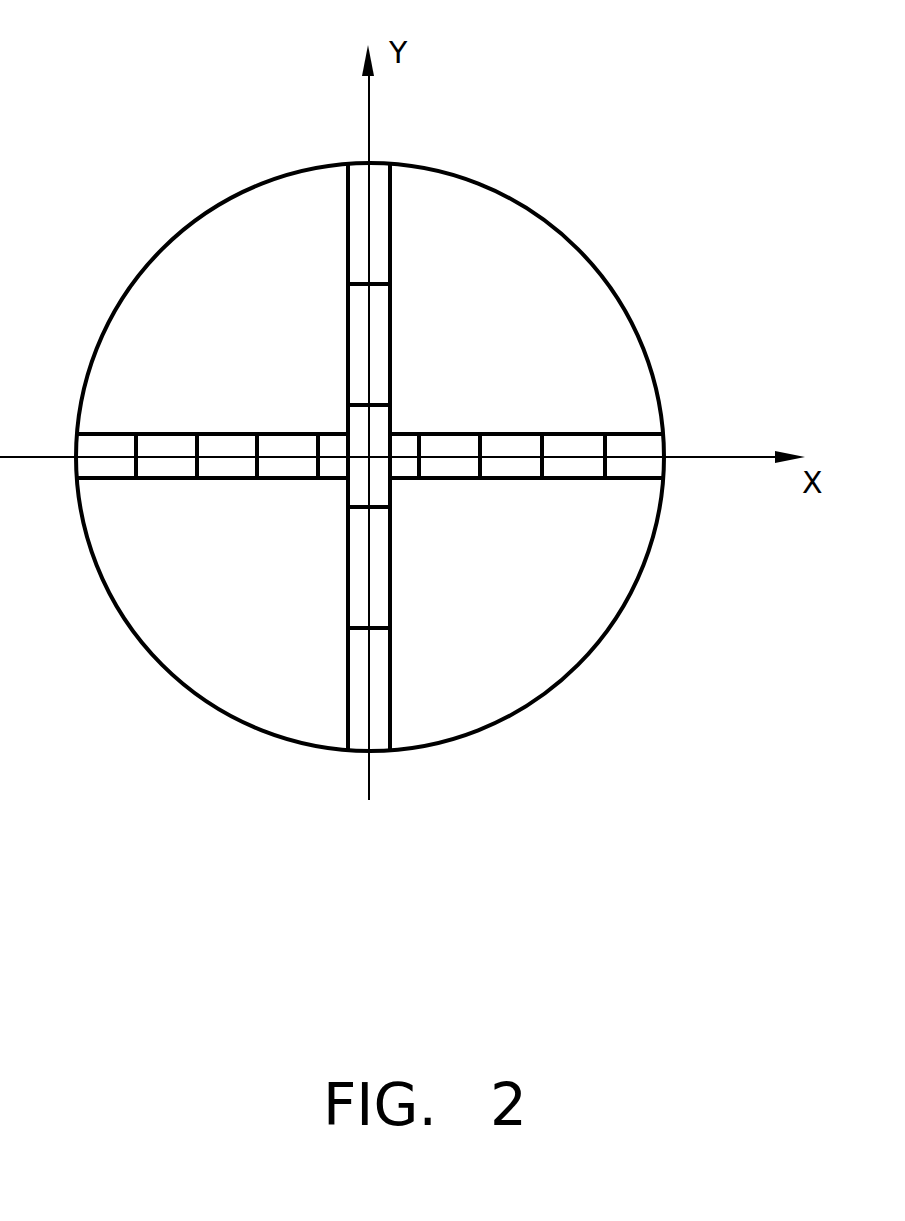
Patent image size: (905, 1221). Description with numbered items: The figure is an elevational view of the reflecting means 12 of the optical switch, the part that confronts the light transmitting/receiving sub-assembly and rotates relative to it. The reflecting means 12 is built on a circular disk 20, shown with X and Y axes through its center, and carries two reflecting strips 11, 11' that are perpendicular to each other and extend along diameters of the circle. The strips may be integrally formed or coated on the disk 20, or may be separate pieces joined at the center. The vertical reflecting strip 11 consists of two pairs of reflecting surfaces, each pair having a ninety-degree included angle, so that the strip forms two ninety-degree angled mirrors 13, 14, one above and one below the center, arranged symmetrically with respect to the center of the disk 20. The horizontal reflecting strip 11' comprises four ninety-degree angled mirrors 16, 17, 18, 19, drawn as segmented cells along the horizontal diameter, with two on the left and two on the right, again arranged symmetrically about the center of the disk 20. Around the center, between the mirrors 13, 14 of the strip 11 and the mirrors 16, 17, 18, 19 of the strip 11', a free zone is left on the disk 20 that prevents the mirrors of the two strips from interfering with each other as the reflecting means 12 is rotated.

The disk 20 is at (288, 218).
The reflecting strip 11 is at (545, 232).
The reflecting strip 11' is at (678, 536).
The reflecting means 12 is at (362, 487).
The 90-degree angled mirror 13 is at (378, 189).
The 90-degree angled mirror 14 is at (377, 693).
The 90-degree angled mirror 16 is at (103, 450).
The 90-degree angled mirror 17 is at (223, 450).
The 90-degree angled mirror 18 is at (523, 450).
The 90-degree angled mirror 19 is at (578, 447).